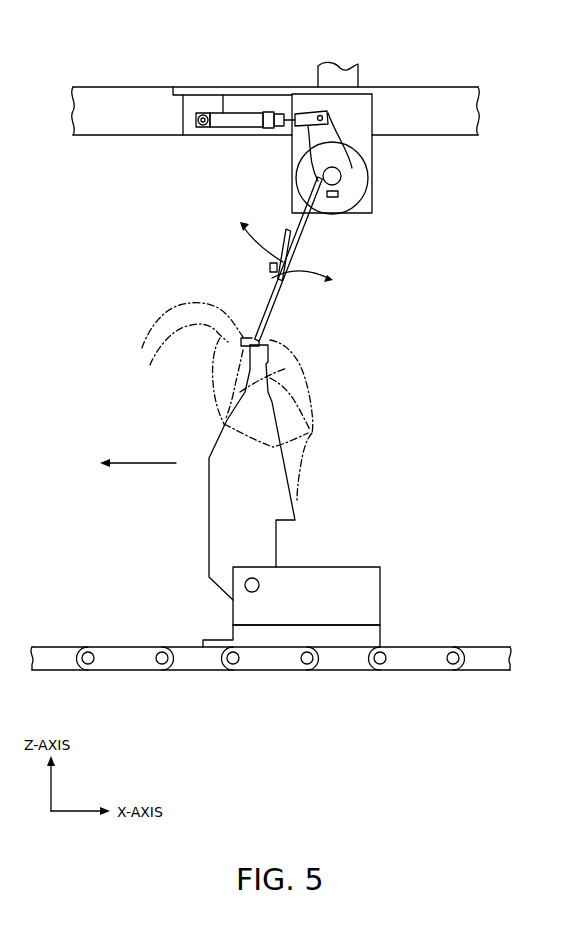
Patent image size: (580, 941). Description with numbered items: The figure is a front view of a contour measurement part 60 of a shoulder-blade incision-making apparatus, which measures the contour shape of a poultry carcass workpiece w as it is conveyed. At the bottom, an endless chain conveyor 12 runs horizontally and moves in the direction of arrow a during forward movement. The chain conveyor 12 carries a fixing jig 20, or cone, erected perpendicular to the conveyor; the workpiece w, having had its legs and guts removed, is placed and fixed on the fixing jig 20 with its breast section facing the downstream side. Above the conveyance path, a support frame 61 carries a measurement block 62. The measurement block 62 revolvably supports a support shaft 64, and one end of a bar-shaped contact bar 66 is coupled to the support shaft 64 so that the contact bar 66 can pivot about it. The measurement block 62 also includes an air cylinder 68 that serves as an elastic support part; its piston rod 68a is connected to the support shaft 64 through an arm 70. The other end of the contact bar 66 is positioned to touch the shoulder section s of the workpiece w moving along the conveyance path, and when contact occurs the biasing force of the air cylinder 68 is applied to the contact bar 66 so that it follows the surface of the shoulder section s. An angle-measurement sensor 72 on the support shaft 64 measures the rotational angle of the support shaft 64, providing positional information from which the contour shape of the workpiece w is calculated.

The contour measurement part 60 is at (369, 48).
The support frame 61 is at (437, 87).
The measurement block 62 is at (373, 151).
The support shaft 64 is at (338, 179).
The contact bar 66 is at (297, 253).
The air cylinder 68 is at (240, 117).
The piston rod 68a is at (310, 113).
The arm 70 is at (330, 136).
The angle-measurement sensor 72 is at (333, 198).
The fixing jig 20 is at (209, 503).
The chain conveyor 12 is at (119, 646).
The shoulder section s is at (233, 333).
The workpiece w is at (312, 389).
The conveying direction arrow a is at (147, 462).